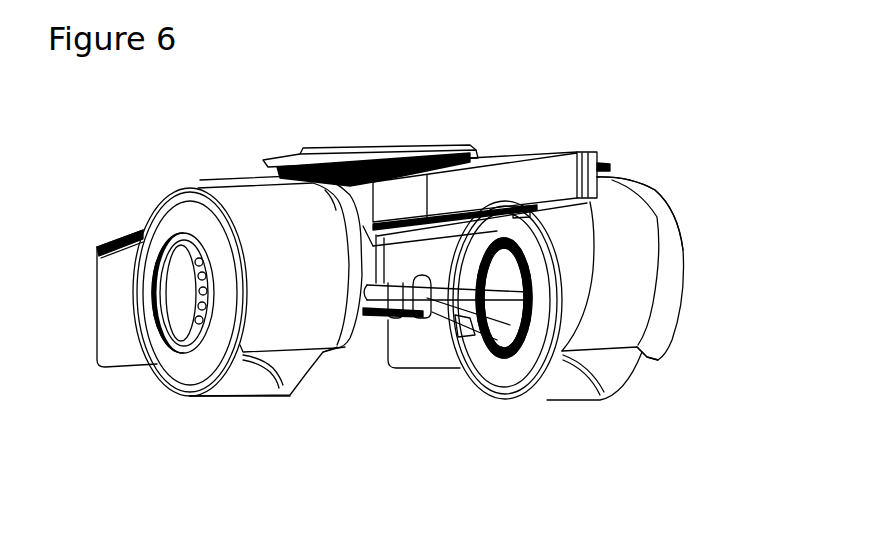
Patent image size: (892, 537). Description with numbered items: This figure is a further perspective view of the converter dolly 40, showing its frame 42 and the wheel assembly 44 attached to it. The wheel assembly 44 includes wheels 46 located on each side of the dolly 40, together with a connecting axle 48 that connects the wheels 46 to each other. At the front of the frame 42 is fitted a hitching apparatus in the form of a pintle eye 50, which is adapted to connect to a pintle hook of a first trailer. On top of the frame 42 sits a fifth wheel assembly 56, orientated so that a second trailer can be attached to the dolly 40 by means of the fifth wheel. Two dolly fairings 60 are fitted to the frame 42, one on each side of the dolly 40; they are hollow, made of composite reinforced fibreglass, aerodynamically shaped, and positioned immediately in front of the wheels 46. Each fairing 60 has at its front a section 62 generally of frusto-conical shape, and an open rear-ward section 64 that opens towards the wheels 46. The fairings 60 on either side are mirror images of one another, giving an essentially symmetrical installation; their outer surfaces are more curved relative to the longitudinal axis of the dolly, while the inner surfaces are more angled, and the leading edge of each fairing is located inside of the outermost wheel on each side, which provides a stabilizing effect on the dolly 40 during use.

The converter dolly 40 is at (715, 128).
The frame 42 is at (544, 172).
The wheel assembly 44 is at (279, 415).
The wheels 46 is at (182, 372).
The connecting axle 48 is at (407, 322).
The pintle eye 50 is at (604, 156).
The fifth wheel assembly 56 is at (343, 150).
The dolly fairings 60 is at (272, 251).
The frusto-conical section 62 is at (202, 184).
The open rear-ward section 64 is at (334, 349).